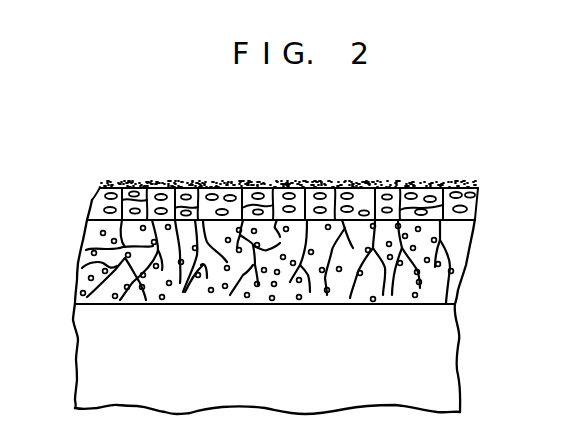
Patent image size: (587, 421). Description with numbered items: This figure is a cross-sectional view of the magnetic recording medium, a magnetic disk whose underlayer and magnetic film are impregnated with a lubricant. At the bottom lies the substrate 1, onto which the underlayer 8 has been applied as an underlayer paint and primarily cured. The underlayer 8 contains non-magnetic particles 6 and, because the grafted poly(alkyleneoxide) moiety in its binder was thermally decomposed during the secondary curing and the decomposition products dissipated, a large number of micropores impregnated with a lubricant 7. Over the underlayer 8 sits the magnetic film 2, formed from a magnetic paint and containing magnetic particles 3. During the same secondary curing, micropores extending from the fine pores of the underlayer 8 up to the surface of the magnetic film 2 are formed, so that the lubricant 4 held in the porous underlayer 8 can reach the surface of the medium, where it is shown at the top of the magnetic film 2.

The substrate 1 is at (455, 364).
The magnetic film 2 is at (475, 205).
The magnetic particles 3 is at (236, 183).
The lubricant 4 is at (438, 183).
The non-magnetic particles 6 is at (197, 305).
The micropores impregnated with a lubricant 7 is at (118, 250).
The underlayer 8 is at (460, 272).